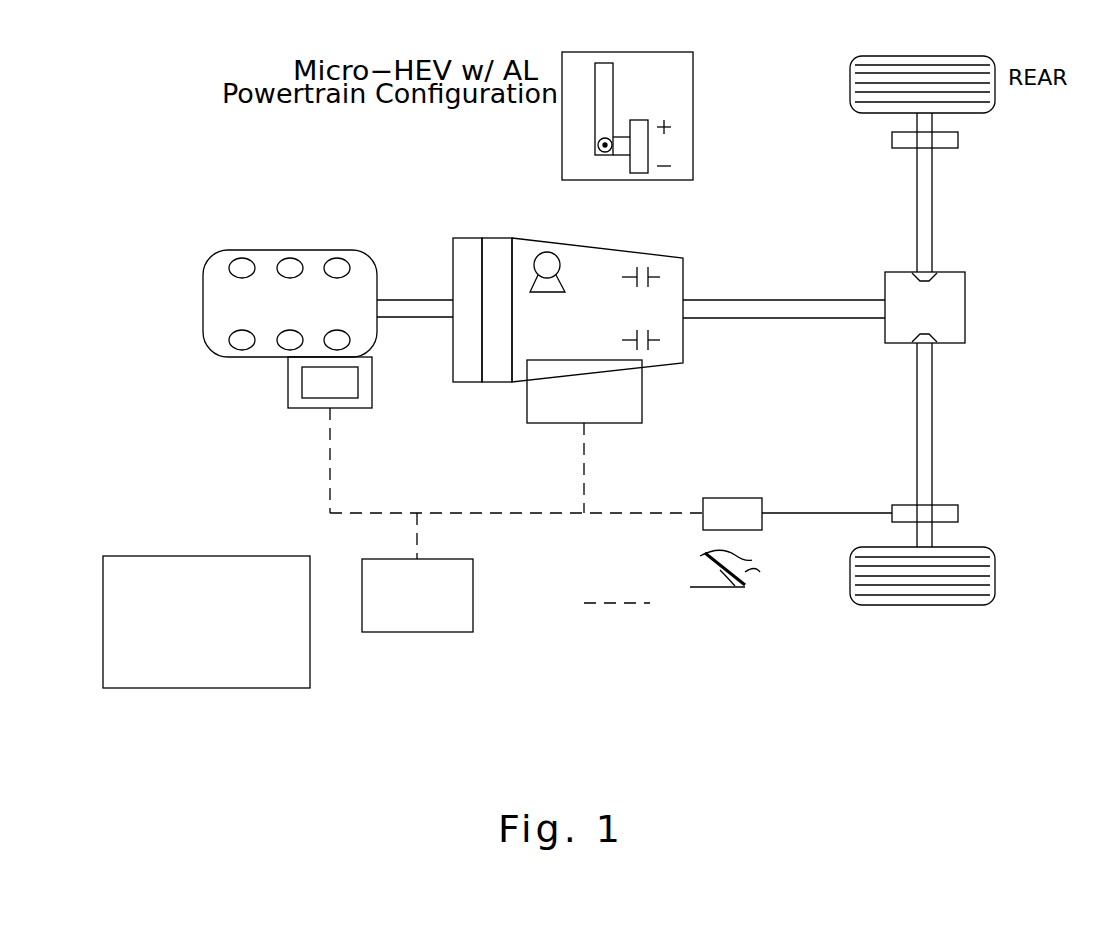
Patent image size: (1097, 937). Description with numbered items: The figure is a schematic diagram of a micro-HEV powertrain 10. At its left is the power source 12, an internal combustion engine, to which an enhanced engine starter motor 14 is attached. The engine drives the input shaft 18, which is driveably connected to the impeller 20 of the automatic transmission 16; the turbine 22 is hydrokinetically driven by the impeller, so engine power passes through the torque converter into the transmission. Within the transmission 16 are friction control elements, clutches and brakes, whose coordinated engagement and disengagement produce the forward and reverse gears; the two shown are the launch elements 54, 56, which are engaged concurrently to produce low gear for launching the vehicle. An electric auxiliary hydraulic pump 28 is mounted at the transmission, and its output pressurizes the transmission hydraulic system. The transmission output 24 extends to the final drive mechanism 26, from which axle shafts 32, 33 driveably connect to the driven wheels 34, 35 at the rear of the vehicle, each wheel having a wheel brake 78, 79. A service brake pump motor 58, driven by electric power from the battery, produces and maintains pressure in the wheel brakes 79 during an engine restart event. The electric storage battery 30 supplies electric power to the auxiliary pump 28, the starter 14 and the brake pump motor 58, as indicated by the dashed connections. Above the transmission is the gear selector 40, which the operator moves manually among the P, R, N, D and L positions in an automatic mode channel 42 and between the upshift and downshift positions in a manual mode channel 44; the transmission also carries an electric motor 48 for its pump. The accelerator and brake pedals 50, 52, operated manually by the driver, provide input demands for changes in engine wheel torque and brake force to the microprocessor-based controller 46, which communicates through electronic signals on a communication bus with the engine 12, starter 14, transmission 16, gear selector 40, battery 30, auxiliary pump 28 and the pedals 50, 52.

The micro-HEV powertrain 10 is at (304, 175).
The power source 12 is at (226, 254).
The enhanced engine starter motor 14 is at (300, 410).
The automatic transmission 16 is at (598, 248).
The input shaft 18 is at (420, 300).
The impeller 20 is at (465, 238).
The turbine 22 is at (500, 238).
The transmission output 24 is at (760, 300).
The final drive mechanism 26 is at (885, 335).
The electric auxiliary hydraulic pump 28 is at (603, 423).
The electric storage battery 30 is at (400, 632).
The axle shaft 32 is at (932, 187).
The axle shaft 33 is at (932, 460).
The driven wheel 34 is at (850, 102).
The driven wheel 35 is at (965, 605).
The gear selector 40 is at (658, 110).
The automatic mode channel 42 is at (607, 68).
The manual mode channel 44 is at (643, 128).
The controller 46 is at (155, 688).
The electric motor 48 is at (547, 252).
The accelerator pedal 50 is at (699, 593).
The brake pedal 52 is at (700, 560).
The launch element 54 is at (660, 277).
The launch element 56 is at (655, 343).
The service brake pump motor 58 is at (732, 498).
The wheel brake 78 is at (958, 148).
The wheel brake 79 is at (958, 513).